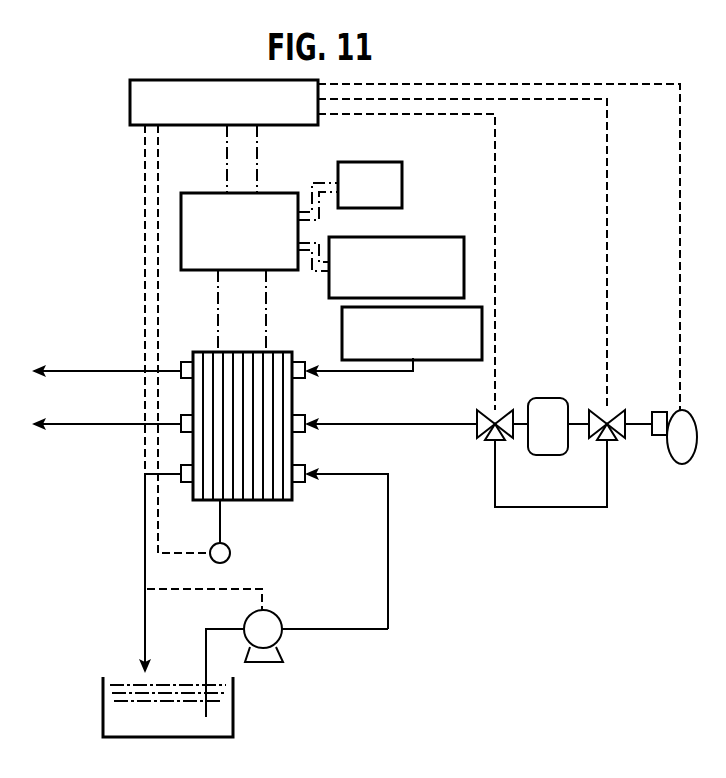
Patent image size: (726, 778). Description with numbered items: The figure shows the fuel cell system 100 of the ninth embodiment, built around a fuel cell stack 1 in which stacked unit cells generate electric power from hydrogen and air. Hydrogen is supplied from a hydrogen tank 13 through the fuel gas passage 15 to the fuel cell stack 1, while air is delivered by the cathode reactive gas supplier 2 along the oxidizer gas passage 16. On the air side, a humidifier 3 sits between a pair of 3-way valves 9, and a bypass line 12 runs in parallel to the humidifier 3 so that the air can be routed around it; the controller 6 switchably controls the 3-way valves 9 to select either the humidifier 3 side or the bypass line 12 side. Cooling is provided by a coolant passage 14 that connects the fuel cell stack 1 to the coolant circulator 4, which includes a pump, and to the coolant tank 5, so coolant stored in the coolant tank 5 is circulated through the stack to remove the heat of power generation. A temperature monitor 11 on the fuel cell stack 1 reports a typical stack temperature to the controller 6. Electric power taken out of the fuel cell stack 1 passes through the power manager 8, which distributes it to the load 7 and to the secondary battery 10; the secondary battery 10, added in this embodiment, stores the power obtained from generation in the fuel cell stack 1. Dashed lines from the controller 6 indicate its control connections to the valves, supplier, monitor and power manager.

The fuel cell stack 1 is at (293, 496).
The cathode reactive gas supplier 2 is at (682, 466).
The humidifier 3 is at (552, 398).
The coolant circulator 4 is at (262, 664).
The coolant tank 5 is at (103, 699).
The controller 6 is at (130, 100).
The load 7 is at (402, 178).
The power manager 8 is at (279, 271).
The 3-way valve 9 is at (490, 441).
The secondary battery 10 is at (440, 237).
The temperature monitor 11 is at (231, 556).
The bypass line 12 is at (541, 510).
The hydrogen tank 13 is at (443, 361).
The coolant passage 14 is at (145, 617).
The fuel gas passage 15 is at (363, 372).
The oxidizer gas passage 16 is at (428, 424).
The fuel cell system 100 is at (475, 688).